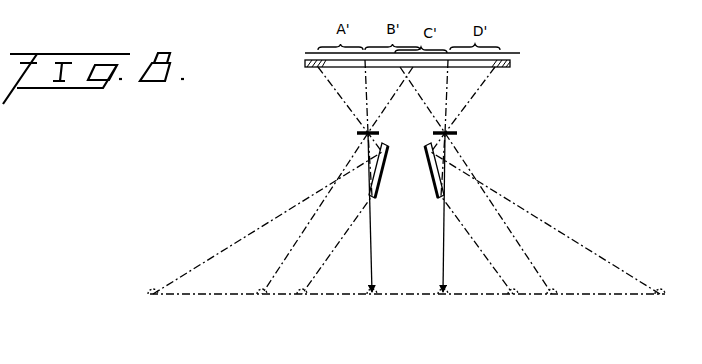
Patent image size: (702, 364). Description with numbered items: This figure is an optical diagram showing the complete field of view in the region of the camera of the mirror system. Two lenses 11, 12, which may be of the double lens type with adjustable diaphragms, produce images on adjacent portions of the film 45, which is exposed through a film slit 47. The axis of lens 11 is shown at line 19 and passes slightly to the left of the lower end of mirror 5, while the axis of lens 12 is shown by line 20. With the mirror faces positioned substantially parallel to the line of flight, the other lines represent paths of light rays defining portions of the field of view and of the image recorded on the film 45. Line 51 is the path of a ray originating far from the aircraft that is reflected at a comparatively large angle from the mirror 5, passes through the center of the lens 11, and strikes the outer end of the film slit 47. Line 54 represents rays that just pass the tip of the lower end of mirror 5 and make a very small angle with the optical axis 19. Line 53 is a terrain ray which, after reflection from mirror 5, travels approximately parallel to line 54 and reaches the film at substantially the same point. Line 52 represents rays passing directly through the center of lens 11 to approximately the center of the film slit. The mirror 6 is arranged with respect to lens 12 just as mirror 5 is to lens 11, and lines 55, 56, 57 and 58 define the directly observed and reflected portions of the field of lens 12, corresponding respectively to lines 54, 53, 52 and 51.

The mirror 5 is at (378, 161).
The mirror 6 is at (438, 162).
The lens 11 is at (358, 133).
The lens 12 is at (458, 133).
The axis of lens 11 19 is at (367, 285).
The axis of lens 12 20 is at (447, 289).
The film 45 is at (506, 54).
The film slit 47 is at (493, 68).
The line 51 is at (155, 300).
The line 52 is at (265, 300).
The line 53 is at (305, 300).
The line 54 is at (379, 300).
The line 55 is at (438, 300).
The line 56 is at (513, 300).
The line 57 is at (552, 300).
The line 58 is at (660, 300).